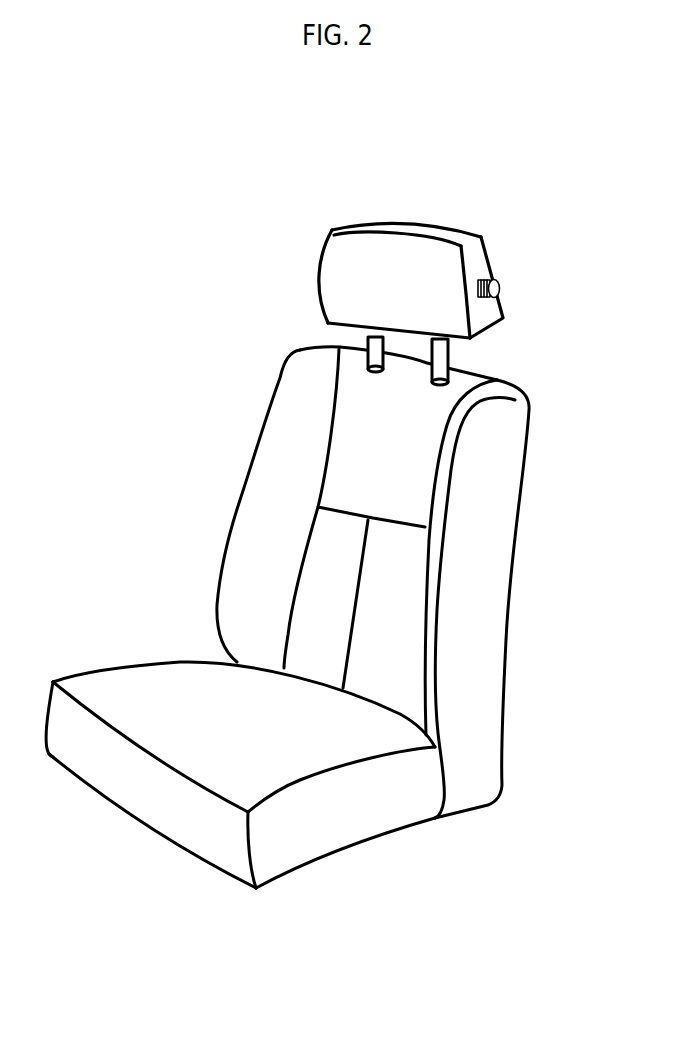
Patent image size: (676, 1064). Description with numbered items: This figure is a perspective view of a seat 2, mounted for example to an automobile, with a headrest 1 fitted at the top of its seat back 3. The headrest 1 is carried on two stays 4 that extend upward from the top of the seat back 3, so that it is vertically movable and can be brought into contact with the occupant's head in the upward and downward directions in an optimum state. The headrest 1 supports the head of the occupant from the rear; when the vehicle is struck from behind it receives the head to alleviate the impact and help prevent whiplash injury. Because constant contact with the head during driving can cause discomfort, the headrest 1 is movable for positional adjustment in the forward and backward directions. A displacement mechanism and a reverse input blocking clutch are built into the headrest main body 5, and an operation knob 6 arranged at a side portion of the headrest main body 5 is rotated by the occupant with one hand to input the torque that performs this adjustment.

The headrest 1 is at (399, 279).
The seat 2 is at (287, 616).
The seat back 3 is at (268, 462).
The stays 4 is at (373, 343).
The headrest main body 5 is at (400, 253).
The operation knob 6 is at (500, 288).